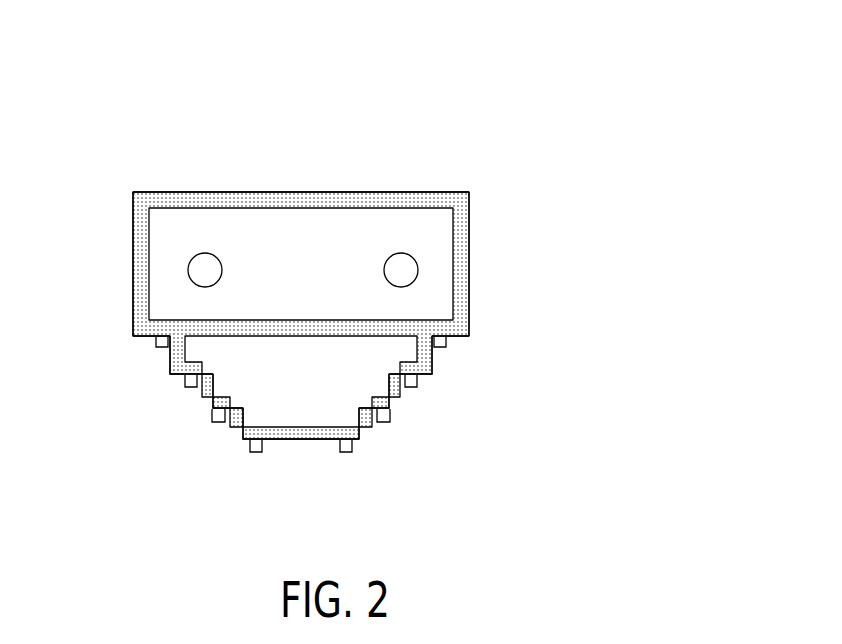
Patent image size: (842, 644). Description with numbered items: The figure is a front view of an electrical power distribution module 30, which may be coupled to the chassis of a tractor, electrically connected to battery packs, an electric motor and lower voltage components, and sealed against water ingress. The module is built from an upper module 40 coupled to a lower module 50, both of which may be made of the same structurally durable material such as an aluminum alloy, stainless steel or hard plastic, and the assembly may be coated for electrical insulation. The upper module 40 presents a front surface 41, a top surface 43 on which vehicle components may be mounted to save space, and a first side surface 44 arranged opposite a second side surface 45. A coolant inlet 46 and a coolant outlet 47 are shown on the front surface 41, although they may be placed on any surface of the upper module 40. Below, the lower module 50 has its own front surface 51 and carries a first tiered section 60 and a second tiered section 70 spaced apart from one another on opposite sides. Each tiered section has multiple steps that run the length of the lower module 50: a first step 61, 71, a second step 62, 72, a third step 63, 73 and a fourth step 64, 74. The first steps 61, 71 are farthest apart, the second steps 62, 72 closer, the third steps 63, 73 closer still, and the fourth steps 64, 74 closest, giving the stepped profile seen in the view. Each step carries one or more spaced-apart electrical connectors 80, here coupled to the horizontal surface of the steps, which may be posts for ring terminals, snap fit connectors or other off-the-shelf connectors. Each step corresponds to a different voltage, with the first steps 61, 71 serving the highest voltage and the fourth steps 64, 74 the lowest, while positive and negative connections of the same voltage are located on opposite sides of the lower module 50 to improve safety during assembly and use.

The electrical power distribution module 30 is at (452, 130).
The upper module 40 is at (155, 171).
The front surface 41 is at (315, 227).
The top surface 43 is at (247, 193).
The first side surface 44 is at (132, 247).
The second side surface 45 is at (470, 243).
The coolant inlet 46 is at (191, 280).
The coolant outlet 47 is at (417, 272).
The lower module 50 is at (309, 465).
The front surface 51 is at (302, 405).
The first tiered section 60 is at (135, 387).
The first step 61 is at (137, 340).
The second step 62 is at (172, 377).
The third step 63 is at (203, 411).
The fourth step 64 is at (242, 443).
The second tiered section 70 is at (462, 390).
The first step 71 is at (470, 337).
The second step 72 is at (432, 376).
The third step 73 is at (395, 411).
The fourth step 74 is at (365, 441).
The electrical connector 80 is at (153, 348).